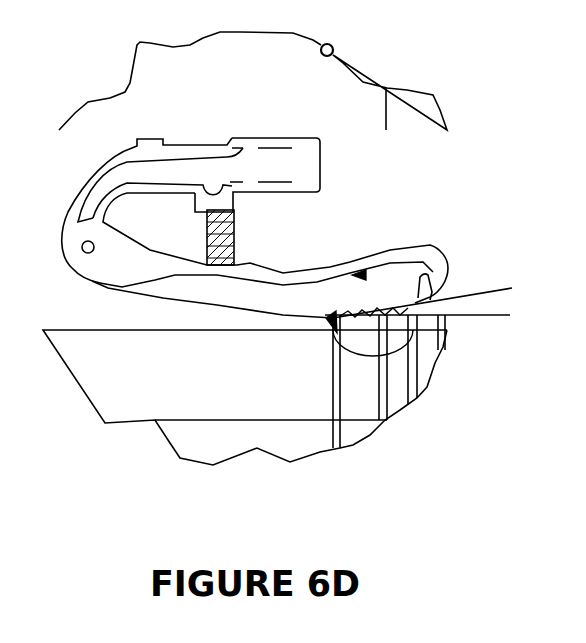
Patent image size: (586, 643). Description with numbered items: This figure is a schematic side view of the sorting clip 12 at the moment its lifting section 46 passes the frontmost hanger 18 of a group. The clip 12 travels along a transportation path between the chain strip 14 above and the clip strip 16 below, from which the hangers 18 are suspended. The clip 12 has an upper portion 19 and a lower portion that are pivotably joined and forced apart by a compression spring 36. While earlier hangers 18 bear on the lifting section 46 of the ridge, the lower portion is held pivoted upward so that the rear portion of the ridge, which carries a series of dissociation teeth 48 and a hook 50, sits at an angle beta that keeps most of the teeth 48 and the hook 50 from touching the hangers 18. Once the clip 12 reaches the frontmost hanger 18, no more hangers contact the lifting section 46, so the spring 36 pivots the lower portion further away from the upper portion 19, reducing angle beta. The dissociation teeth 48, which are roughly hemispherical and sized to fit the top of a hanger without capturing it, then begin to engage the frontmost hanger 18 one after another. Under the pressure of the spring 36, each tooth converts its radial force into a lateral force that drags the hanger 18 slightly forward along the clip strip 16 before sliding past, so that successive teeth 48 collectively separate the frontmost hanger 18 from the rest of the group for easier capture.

The clip 12 is at (98, 273).
The chain strip 14 is at (440, 115).
The clip strip 16 is at (428, 362).
The hangers 18 is at (333, 403).
The upper portion 19 is at (307, 163).
The compression spring 36 is at (233, 238).
The lifting section 46 is at (160, 300).
The dissociation teeth 48 is at (352, 313).
The hook 50 is at (423, 282).